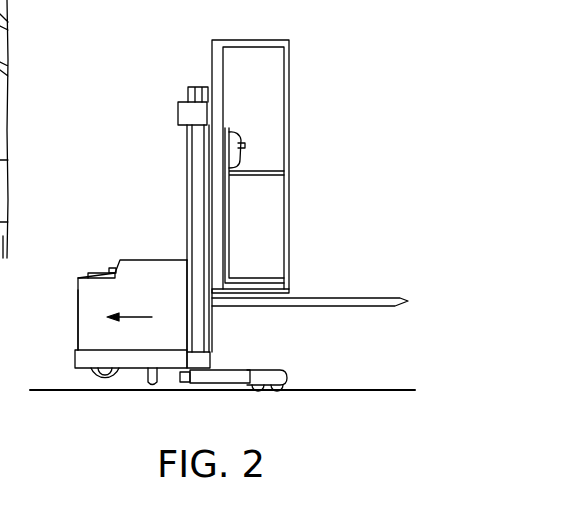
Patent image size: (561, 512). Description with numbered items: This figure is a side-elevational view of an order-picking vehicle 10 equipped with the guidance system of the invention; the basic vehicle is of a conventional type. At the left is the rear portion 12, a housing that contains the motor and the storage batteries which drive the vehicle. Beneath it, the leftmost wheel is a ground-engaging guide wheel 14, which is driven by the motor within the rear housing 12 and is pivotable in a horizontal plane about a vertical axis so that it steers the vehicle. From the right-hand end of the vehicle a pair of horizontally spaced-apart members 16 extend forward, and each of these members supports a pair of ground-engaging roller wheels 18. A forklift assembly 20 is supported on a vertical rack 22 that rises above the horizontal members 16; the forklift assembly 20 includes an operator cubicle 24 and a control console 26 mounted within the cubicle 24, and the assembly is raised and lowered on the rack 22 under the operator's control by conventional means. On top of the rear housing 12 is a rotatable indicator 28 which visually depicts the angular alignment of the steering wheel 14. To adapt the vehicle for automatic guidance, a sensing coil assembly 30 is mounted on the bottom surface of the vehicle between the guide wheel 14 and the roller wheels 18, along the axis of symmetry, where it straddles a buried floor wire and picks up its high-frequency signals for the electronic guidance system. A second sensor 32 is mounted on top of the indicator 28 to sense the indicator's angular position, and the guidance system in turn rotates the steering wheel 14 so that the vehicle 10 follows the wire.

The order-picking vehicle 10 is at (155, 259).
The rear portion 12 is at (82, 318).
The ground-engaging guide wheel 14 is at (107, 384).
The horizontally spaced-apart members 16 is at (235, 373).
The ground-engaging roller wheels 18 is at (290, 384).
The forklift assembly 20 is at (308, 298).
The vertical rack 22 is at (192, 170).
The operator cubicle 24 is at (290, 56).
The control console 26 is at (233, 134).
The rotatable indicator 28 is at (100, 273).
The sensing coil assembly 30 is at (159, 386).
The second sensor 32 is at (111, 268).